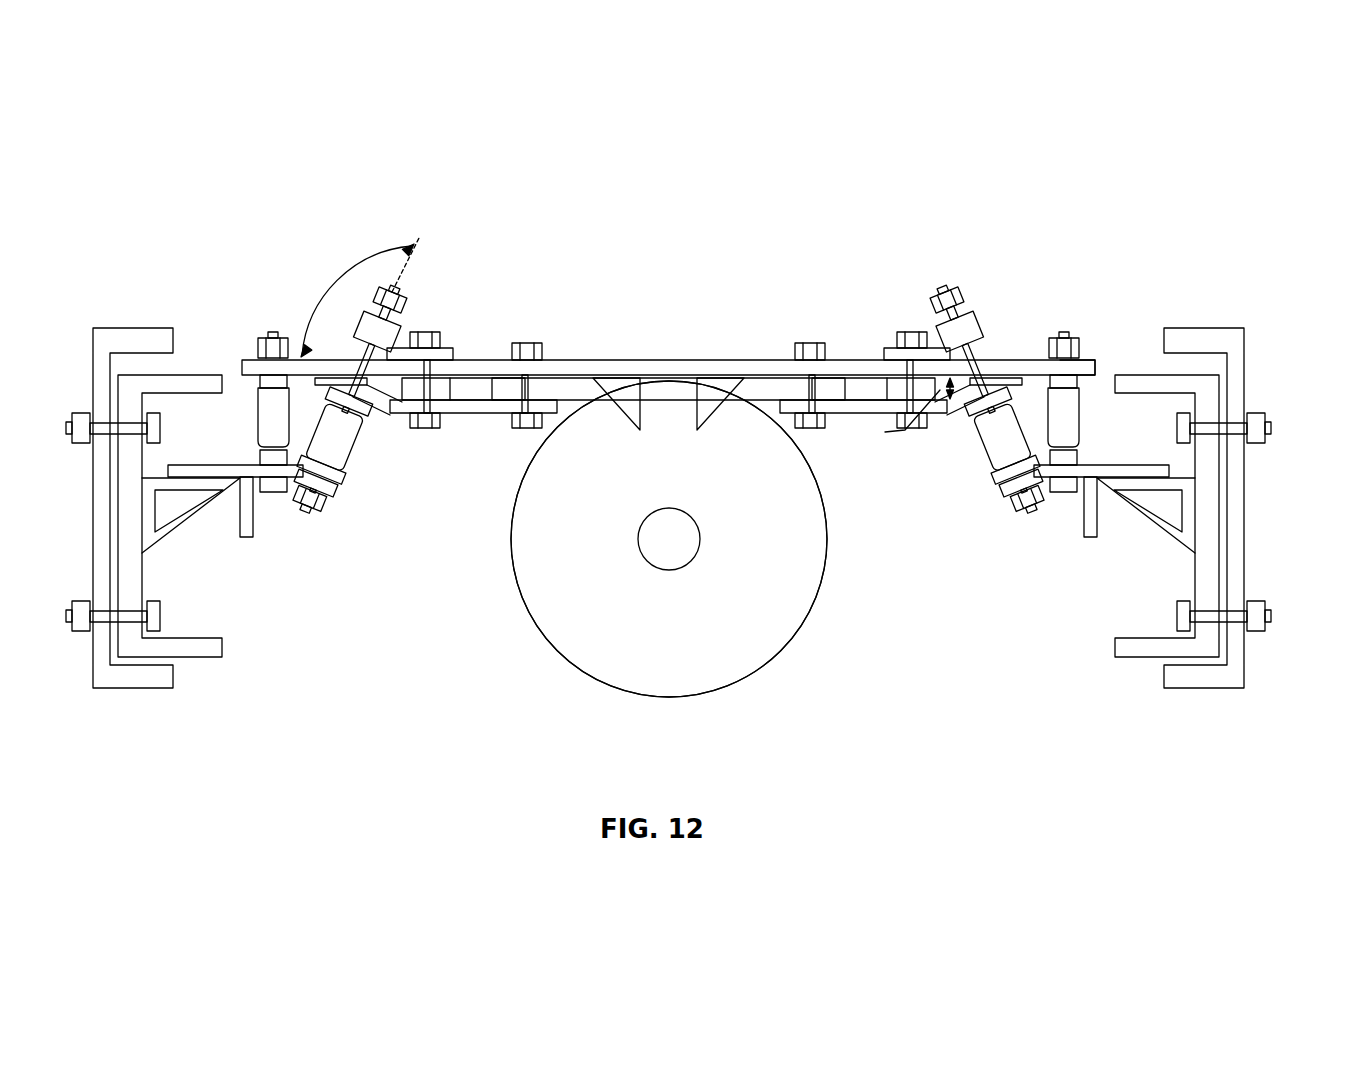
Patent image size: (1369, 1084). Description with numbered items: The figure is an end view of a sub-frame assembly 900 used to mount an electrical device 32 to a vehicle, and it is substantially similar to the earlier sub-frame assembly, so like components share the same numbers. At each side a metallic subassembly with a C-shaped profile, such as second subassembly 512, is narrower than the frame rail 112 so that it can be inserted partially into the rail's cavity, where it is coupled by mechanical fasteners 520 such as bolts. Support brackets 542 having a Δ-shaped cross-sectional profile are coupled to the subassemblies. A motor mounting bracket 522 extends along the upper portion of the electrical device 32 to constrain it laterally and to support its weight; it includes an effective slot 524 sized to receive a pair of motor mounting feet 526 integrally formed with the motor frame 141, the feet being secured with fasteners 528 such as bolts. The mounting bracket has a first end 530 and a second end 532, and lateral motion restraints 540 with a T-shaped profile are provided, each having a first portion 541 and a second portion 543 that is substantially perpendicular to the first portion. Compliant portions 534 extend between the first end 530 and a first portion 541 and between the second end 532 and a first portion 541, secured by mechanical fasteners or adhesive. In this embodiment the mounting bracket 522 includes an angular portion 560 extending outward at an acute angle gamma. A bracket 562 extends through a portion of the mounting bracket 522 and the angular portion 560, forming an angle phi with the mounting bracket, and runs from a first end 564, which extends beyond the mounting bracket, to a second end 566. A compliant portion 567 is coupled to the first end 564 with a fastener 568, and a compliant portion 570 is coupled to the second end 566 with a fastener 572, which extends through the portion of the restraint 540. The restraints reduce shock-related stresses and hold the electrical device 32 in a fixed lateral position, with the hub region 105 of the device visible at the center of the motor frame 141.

The sub-frame assembly 900 is at (152, 243).
The first end 530 is at (252, 356).
The motor mounting bracket 522 is at (472, 348).
The second end 532 is at (1083, 370).
The first end 564 is at (943, 345).
The fasteners 528 is at (811, 385).
The effective slot 524 is at (862, 380).
The second end 566 is at (360, 408).
The motor mounting feet 526 is at (618, 400).
The electrical device 32 is at (808, 490).
The motor frame 141 is at (830, 545).
The hub 105 is at (665, 520).
The compliant portion 570 is at (345, 450).
The fastener 568 is at (948, 290).
The compliant portion 567 is at (940, 338).
The bracket 562 is at (982, 382).
The angular portion 560 is at (945, 407).
The fastener 572 is at (1010, 500).
The compliant portions 534 is at (1065, 440).
The frame rail 112 is at (1197, 345).
The second subassembly 512 is at (1150, 660).
The mechanical fasteners 520 is at (1266, 425).
The lateral motion restraints 540 is at (1082, 550).
The first portion 541 is at (1160, 470).
The second portion 543 is at (1083, 505).
The support brackets 542 is at (1168, 560).